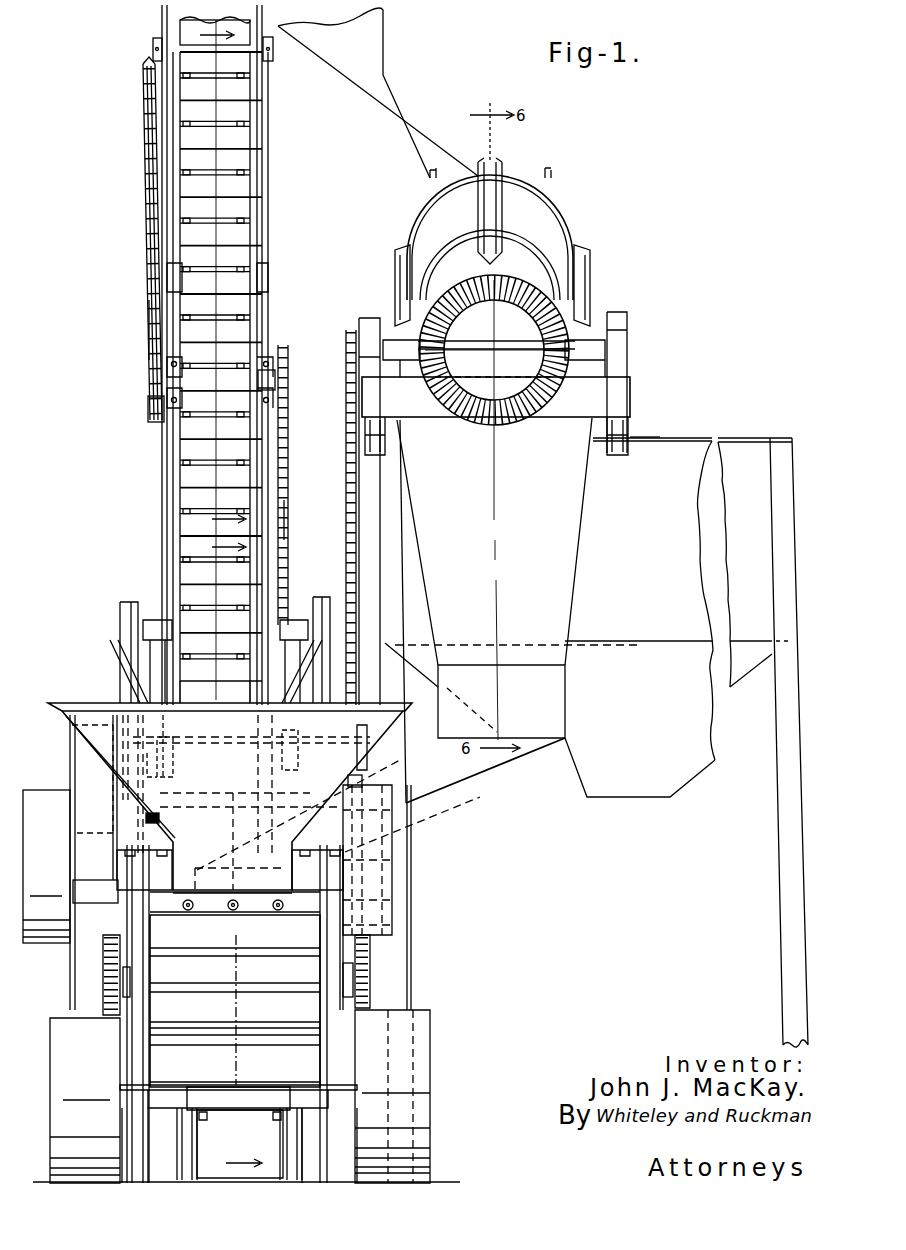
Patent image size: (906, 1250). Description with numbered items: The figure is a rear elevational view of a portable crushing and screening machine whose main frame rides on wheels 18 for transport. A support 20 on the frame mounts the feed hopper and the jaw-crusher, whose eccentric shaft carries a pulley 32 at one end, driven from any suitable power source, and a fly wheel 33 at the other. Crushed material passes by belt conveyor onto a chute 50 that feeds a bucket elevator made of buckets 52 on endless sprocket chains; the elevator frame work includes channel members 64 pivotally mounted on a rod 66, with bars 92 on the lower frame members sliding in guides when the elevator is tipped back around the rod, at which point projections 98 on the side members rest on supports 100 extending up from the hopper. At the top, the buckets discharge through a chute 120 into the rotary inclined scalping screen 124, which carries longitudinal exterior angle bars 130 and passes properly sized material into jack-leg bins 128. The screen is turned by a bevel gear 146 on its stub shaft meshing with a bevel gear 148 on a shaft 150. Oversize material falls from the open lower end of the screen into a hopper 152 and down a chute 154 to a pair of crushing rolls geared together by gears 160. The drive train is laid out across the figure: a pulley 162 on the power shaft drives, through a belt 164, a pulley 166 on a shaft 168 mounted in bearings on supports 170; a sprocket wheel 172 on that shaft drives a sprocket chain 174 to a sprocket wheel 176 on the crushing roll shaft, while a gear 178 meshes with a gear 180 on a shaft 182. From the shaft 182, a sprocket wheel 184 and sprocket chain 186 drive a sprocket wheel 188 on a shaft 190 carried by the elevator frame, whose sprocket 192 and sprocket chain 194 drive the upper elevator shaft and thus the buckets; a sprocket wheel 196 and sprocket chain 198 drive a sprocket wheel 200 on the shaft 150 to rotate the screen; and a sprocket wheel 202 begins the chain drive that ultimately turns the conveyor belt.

The wheels 18 is at (62, 1025).
The support 20 is at (307, 968).
The pulley 32 is at (44, 804).
The fly wheel 33 is at (392, 878).
The chute 50 is at (205, 1146).
The buckets 52 is at (245, 200).
The channel members 64 is at (148, 176).
The rod 66 is at (216, 671).
The bars 92 is at (177, 1161).
The projections 98 is at (156, 46).
The supports 100 is at (162, 620).
The chute 120 is at (400, 108).
The rotary inclined screen 124 is at (548, 218).
The jack-leg hoppers or bins 128 is at (688, 780).
The angle bars 130 is at (496, 172).
The bevel gear 146 is at (515, 422).
The bevel gear 148 is at (440, 380).
The shaft 150 is at (506, 343).
The hopper 152 is at (560, 606).
The chute 154 is at (434, 788).
The gears 160 is at (104, 965).
The pulley 162 is at (75, 903).
The belt 164 is at (82, 760).
The pulley 166 is at (72, 752).
The shaft 168 is at (218, 808).
The supports 170 is at (124, 645).
The sprocket wheel 172 is at (380, 777).
The sprocket chain 174 is at (403, 837).
The sprocket wheel 176 is at (370, 1004).
The gear 178 is at (162, 816).
The gear 180 is at (158, 774).
The shaft 182 is at (205, 742).
The sprocket wheel 184 is at (290, 770).
The sprocket chain 186 is at (289, 518).
The sprocket wheel 188 is at (288, 350).
The shaft 190 is at (268, 382).
The sprocket 192 is at (150, 406).
The sprocket chain 194 is at (148, 332).
The sprocket wheel 196 is at (380, 758).
The sprocket chain 198 is at (346, 482).
The sprocket wheel 200 is at (340, 330).
The sprocket wheel 202 is at (178, 760).